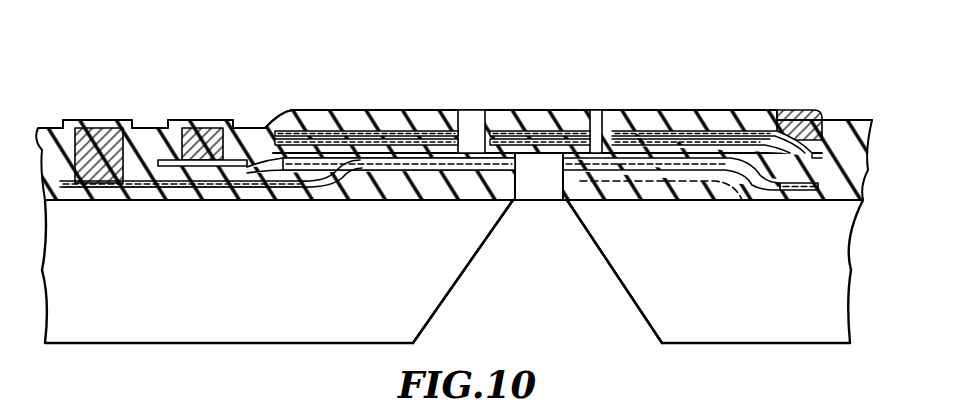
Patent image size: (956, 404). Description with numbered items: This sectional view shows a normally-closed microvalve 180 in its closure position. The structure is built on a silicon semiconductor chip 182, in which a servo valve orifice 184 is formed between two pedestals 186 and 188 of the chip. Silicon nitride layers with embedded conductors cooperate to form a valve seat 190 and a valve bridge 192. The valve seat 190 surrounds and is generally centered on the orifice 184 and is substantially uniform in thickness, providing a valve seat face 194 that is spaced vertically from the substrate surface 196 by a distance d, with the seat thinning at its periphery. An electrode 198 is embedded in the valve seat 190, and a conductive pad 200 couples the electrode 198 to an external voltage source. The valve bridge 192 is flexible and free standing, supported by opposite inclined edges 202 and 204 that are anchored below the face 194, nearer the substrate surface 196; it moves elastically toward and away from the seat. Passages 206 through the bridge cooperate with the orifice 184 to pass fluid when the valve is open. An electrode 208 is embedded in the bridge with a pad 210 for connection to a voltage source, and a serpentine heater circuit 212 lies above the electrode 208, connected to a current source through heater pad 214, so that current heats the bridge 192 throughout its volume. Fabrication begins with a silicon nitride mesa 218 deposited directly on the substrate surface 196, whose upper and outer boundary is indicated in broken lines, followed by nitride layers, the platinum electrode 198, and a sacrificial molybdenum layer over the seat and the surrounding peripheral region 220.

The microvalve 180 is at (385, 61).
The semiconductor chip 182 is at (238, 328).
The servo valve orifice 184 is at (493, 216).
The pedestal 186 is at (418, 308).
The pedestal 188 is at (655, 306).
The valve seat 190 is at (355, 201).
The valve bridge 192 is at (548, 122).
The valve seat face 194 is at (466, 150).
The substrate surface 196 is at (152, 202).
The electrode 198 is at (403, 201).
The conductive pad 200 is at (97, 125).
The inclined edge 202 is at (262, 130).
The inclined edge 204 is at (808, 122).
The passage 206 is at (602, 115).
The electrode 208 is at (733, 120).
The pad 210 is at (198, 122).
The heater circuit 212 is at (333, 137).
The heater pad 214 is at (789, 120).
The mesa 218 is at (690, 205).
The peripheral region 220 is at (282, 200).